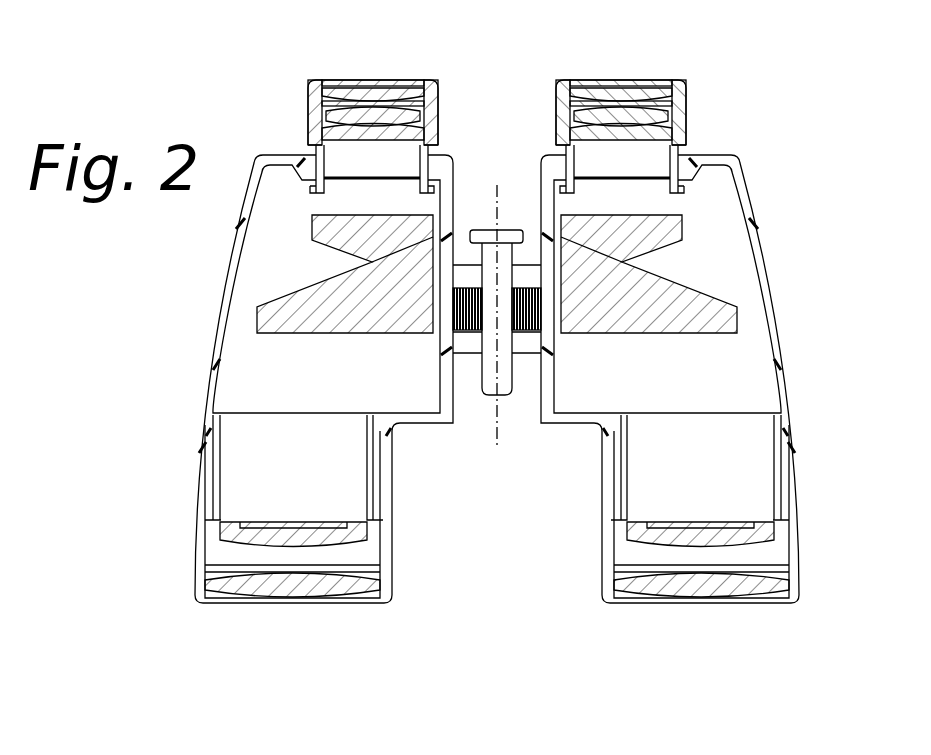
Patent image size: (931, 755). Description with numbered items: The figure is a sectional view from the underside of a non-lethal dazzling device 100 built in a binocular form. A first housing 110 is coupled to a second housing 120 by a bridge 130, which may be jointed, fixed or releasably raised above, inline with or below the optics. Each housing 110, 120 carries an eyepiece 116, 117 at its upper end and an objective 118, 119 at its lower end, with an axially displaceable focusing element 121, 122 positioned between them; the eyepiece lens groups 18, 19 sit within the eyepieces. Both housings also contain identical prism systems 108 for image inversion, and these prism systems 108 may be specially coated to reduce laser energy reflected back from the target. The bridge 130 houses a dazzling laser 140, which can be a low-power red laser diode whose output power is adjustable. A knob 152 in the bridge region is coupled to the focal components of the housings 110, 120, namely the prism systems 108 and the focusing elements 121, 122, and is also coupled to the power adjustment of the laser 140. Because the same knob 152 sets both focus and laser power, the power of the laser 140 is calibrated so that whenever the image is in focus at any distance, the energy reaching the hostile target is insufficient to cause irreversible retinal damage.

The non-lethal dazzling device 100 is at (198, 84).
The first housing 110 is at (203, 420).
The second housing 120 is at (782, 334).
The eyepiece 116 is at (438, 89).
The eyepiece 117 is at (560, 86).
The left eyepiece lens group 18 is at (373, 70).
The right eyepiece lens group 19 is at (621, 70).
The prism system 108 is at (336, 278).
The bridge 130 is at (544, 262).
The dazzling laser 140 is at (492, 393).
The knob 152 is at (526, 334).
The axially displaceable focusing element 121 is at (365, 541).
The axially displaceable focusing element 122 is at (638, 538).
The objective 118 is at (318, 590).
The objective 119 is at (720, 582).